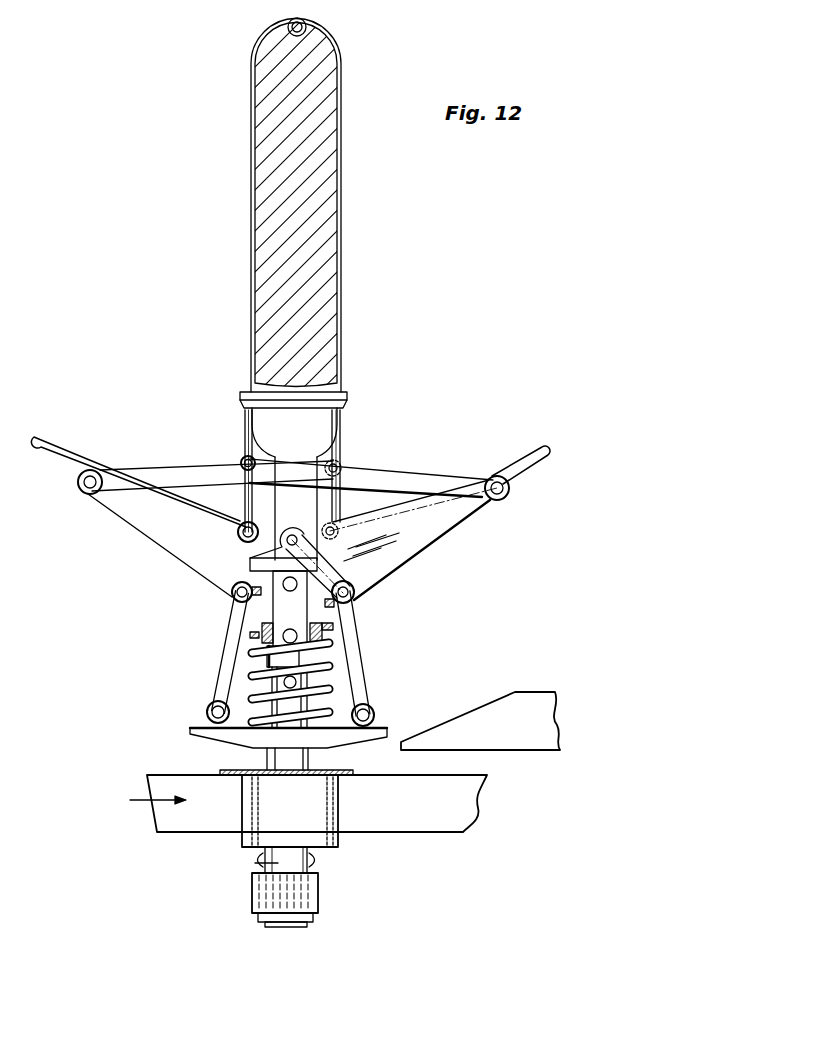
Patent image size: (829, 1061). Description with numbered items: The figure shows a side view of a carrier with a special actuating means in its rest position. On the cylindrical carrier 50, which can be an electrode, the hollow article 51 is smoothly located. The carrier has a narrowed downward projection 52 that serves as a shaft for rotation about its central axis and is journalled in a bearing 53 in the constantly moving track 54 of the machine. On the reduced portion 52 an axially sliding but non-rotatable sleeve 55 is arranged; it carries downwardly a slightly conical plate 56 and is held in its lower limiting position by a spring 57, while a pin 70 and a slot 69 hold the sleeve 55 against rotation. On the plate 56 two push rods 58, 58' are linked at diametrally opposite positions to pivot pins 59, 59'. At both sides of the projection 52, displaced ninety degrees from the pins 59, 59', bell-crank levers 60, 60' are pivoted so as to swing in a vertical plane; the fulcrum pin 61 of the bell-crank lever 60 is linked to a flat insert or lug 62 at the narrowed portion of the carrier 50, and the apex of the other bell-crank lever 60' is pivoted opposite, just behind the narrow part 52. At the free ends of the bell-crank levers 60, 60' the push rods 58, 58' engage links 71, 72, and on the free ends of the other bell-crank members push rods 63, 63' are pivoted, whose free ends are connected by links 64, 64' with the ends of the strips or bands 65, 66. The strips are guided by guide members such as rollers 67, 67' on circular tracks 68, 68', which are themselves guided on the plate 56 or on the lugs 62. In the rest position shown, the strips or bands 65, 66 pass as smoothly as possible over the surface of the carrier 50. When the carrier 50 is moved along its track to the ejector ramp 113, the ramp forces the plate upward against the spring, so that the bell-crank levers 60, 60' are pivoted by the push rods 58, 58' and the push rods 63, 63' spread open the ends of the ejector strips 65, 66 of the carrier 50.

The cylindrical carrier 50 is at (318, 219).
The hollow article 51 is at (251, 331).
The narrowed downward projection 52 is at (281, 487).
The bearing 53 is at (247, 847).
The constantly moving track 54 is at (178, 828).
The sleeve 55 is at (333, 637).
The conical plate 56 is at (242, 738).
The spring 57 is at (334, 675).
The push rod 58 is at (372, 653).
The push rod 58' is at (212, 652).
The pivot pin 59 is at (391, 718).
The pivot pin 59' is at (189, 713).
The bell-crank lever 60 is at (420, 538).
The bell-crank lever 60' is at (155, 533).
The fulcrum pin 61 is at (292, 529).
The lug 62 is at (260, 556).
The push rod 63 is at (372, 460).
The push rod 63' is at (212, 462).
The link 64 is at (220, 453).
The link 64' is at (363, 460).
The ejector strip 65 is at (251, 420).
The ejector strip 66 is at (338, 428).
The roller 67 is at (207, 529).
The roller 67' is at (387, 557).
The circular track 68 is at (138, 469).
The circular track 68' is at (529, 450).
The slot 69 is at (283, 660).
The pin 70 is at (290, 630).
The link 71 is at (235, 598).
The link 72 is at (352, 594).
The ejector ramp 113 is at (523, 700).